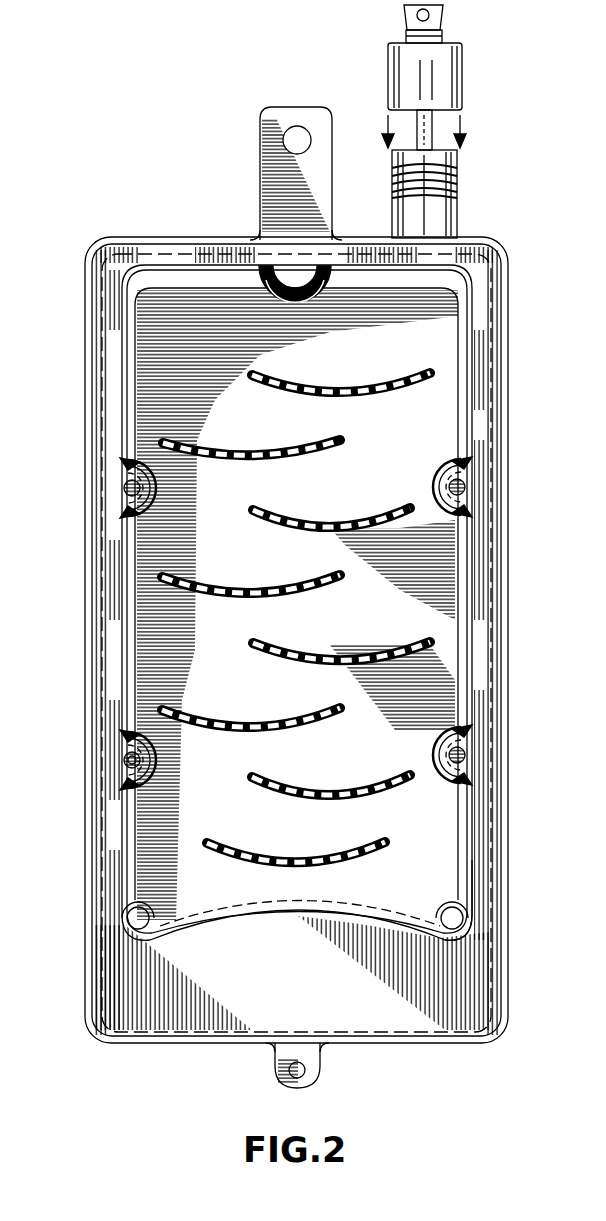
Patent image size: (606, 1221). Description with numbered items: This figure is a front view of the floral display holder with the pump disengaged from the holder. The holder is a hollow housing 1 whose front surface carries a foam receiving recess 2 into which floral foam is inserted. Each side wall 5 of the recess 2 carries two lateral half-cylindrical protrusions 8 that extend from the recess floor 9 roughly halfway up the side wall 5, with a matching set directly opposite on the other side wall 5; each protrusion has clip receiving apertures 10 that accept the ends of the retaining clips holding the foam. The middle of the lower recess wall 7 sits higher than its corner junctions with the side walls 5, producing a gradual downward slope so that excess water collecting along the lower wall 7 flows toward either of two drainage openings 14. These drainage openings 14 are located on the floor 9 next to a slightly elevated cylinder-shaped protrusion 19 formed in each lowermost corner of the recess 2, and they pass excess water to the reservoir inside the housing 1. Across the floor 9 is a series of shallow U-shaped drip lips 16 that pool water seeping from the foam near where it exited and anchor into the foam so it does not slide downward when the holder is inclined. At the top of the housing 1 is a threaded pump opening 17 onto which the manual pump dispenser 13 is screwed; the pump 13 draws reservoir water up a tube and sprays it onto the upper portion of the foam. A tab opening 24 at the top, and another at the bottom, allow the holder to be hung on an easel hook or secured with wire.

The housing 1 is at (115, 236).
The foam receiving recess 2 is at (192, 372).
The side wall 5 is at (125, 612).
The lower recess wall 7 is at (312, 905).
The lateral half-cylindrical protrusions 8 is at (132, 525).
The recess floor 9 is at (222, 668).
The clip receiving apertures 10 is at (130, 775).
The manual pump dispenser 13 is at (462, 62).
The drainage openings 14 is at (440, 912).
The drip lips 16 is at (329, 520).
The threaded pump opening 17 is at (457, 210).
The cylinder-shaped protrusion 19 is at (470, 920).
The tab opening 24 is at (297, 126).